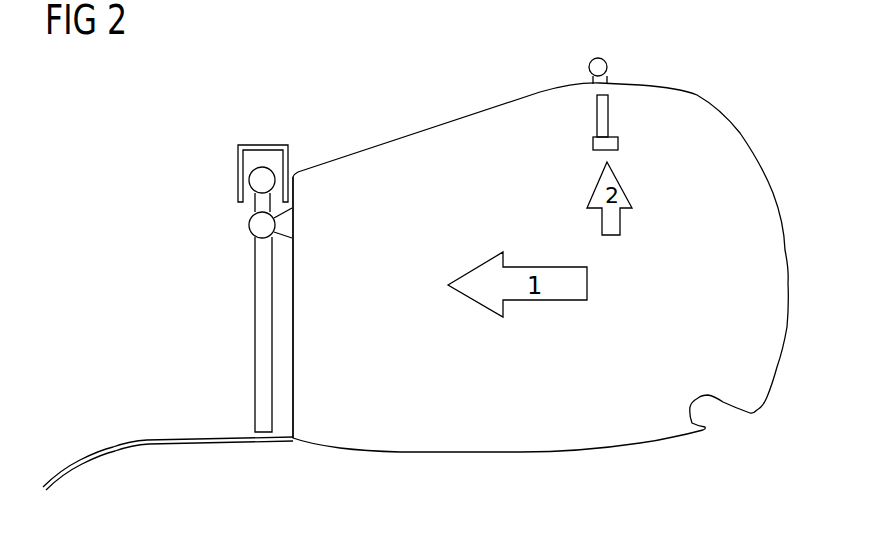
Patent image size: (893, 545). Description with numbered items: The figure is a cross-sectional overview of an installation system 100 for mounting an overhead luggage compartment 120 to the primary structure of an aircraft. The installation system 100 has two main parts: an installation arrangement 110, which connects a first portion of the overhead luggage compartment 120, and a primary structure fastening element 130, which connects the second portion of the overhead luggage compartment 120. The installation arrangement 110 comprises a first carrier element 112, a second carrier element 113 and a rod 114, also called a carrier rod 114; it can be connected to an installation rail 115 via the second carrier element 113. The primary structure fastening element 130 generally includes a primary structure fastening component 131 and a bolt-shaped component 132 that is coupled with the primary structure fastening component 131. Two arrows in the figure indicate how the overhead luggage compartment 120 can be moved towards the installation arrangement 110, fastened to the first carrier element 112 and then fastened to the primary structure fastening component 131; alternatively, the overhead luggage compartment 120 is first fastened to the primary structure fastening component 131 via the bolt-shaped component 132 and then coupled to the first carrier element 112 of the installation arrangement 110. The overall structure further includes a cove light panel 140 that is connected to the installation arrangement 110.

The installation system 100 is at (763, 64).
The installation arrangement 110 is at (218, 260).
The first carrier element 112 is at (251, 230).
The second carrier element 113 is at (248, 180).
The rod 114 is at (256, 320).
The installation rail 115 is at (258, 143).
The overhead luggage compartment 120 is at (545, 455).
The primary structure fastening element 130 is at (592, 96).
The primary structure fastening component 131 is at (607, 62).
The bolt-shaped component 132 is at (612, 118).
The cove light panel 140 is at (147, 447).